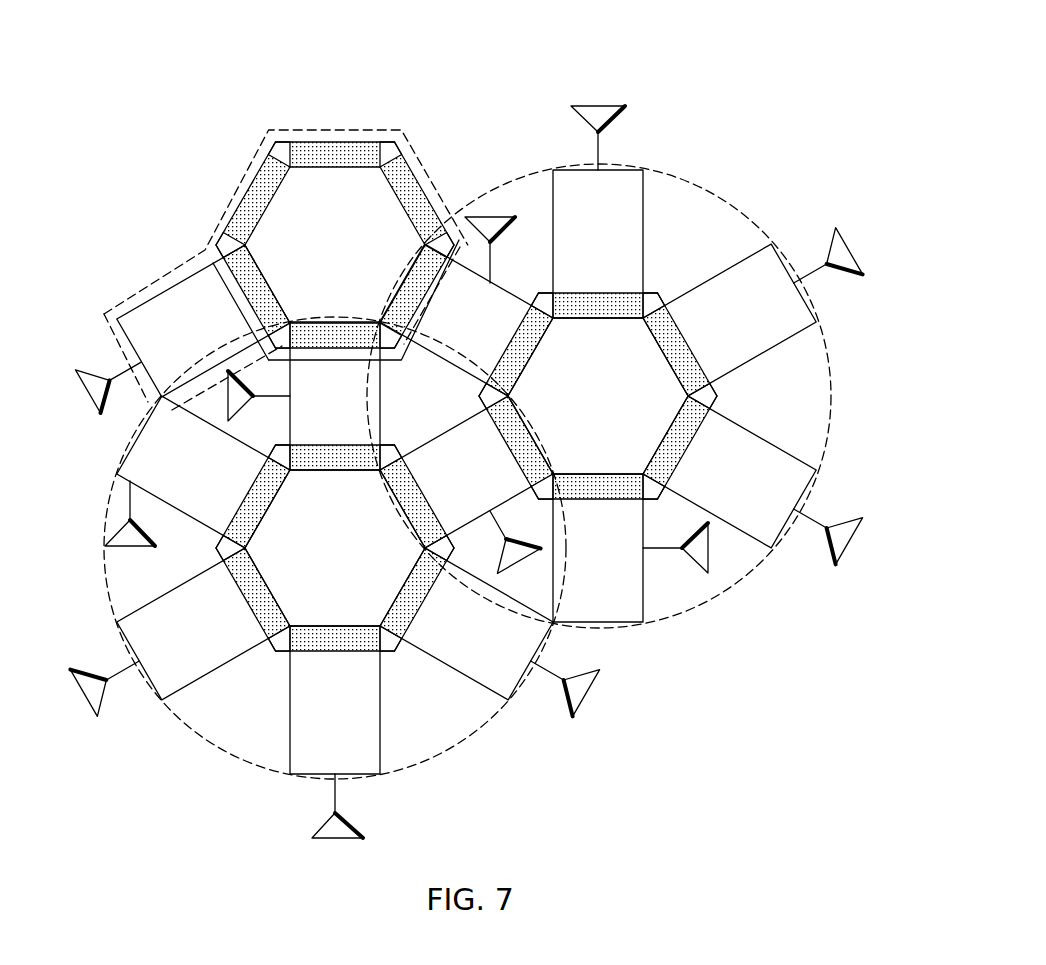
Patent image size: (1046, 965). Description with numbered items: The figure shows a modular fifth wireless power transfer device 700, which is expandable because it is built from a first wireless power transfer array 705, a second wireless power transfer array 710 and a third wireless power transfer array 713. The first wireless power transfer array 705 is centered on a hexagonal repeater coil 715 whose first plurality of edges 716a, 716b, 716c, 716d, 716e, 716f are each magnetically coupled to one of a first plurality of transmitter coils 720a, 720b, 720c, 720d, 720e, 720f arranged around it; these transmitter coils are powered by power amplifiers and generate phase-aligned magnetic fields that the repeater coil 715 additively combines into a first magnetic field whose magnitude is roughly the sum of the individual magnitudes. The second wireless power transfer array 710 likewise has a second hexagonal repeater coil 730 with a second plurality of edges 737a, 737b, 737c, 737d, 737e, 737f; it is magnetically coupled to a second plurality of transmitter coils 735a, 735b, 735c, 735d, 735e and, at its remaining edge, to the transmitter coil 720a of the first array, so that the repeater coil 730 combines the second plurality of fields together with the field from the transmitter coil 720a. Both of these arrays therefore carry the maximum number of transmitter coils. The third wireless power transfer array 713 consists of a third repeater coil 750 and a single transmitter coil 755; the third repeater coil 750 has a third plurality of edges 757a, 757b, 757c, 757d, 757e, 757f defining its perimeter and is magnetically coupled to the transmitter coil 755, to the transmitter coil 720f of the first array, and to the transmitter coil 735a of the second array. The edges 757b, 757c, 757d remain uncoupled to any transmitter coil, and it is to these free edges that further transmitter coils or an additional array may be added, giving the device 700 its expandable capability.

The fifth wireless power transfer device 700 is at (765, 36).
The first wireless power transfer array 705 is at (462, 750).
The second wireless power transfer array 710 is at (711, 192).
The third wireless power transfer array 713 is at (357, 152).
The hexagonal repeater coil 715 is at (335, 548).
The edge of first repeater coil 716a is at (433, 480).
The edge of first repeater coil 716b is at (413, 615).
The edge of first repeater coil 716c is at (317, 664).
The edge of first repeater coil 716d is at (221, 593).
The edge of first repeater coil 716e is at (223, 503).
The edge of first repeater coil 716f is at (335, 436).
The transmitter coil 720a is at (466, 484).
The transmitter coil 720b is at (490, 632).
The transmitter coil 720c is at (335, 732).
The transmitter coil 720d is at (180, 632).
The transmitter coil 720e is at (197, 472).
The transmitter coil 720f is at (304, 396).
The second hexagonal repeater coil 730 is at (598, 396).
The transmitter coil 735a is at (466, 306).
The transmitter coil 735b is at (598, 212).
The transmitter coil 735c is at (753, 312).
The transmitter coil 735d is at (753, 480).
The transmitter coil 735e is at (630, 548).
The edge of second repeater coil 737a is at (545, 351).
The edge of second repeater coil 737b is at (598, 279).
The edge of second repeater coil 737c is at (697, 351).
The edge of second repeater coil 737d is at (699, 441).
The edge of second repeater coil 737e is at (598, 512).
The edge of second repeater coil 737f is at (540, 441).
The third repeater coil 750 is at (286, 270).
The transmitter coil 755 is at (183, 329).
The edge of third repeater coil 757a is at (207, 296).
The edge of third repeater coil 757b is at (229, 200).
The edge of third repeater coil 757c is at (315, 148).
The edge of third repeater coil 757d is at (437, 200).
The edge of third repeater coil 757e is at (399, 287).
The edge of third repeater coil 757f is at (335, 309).